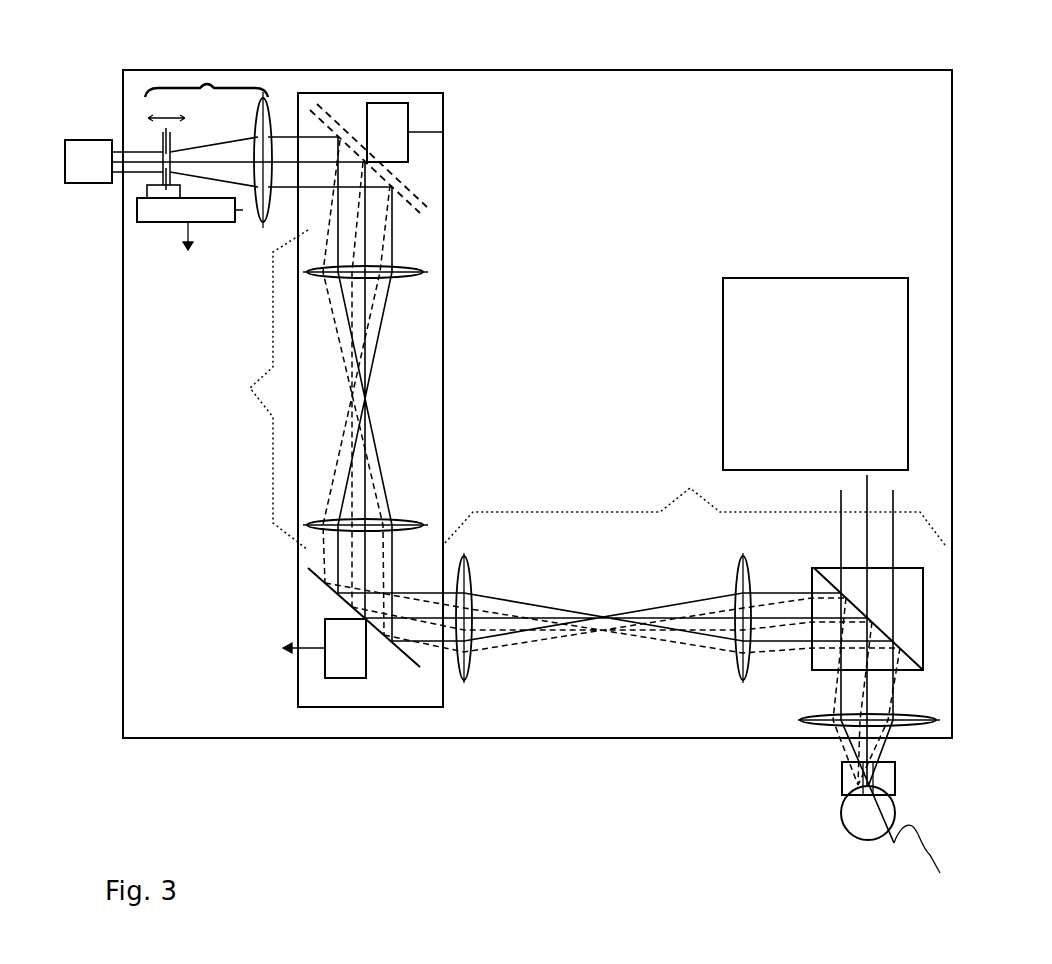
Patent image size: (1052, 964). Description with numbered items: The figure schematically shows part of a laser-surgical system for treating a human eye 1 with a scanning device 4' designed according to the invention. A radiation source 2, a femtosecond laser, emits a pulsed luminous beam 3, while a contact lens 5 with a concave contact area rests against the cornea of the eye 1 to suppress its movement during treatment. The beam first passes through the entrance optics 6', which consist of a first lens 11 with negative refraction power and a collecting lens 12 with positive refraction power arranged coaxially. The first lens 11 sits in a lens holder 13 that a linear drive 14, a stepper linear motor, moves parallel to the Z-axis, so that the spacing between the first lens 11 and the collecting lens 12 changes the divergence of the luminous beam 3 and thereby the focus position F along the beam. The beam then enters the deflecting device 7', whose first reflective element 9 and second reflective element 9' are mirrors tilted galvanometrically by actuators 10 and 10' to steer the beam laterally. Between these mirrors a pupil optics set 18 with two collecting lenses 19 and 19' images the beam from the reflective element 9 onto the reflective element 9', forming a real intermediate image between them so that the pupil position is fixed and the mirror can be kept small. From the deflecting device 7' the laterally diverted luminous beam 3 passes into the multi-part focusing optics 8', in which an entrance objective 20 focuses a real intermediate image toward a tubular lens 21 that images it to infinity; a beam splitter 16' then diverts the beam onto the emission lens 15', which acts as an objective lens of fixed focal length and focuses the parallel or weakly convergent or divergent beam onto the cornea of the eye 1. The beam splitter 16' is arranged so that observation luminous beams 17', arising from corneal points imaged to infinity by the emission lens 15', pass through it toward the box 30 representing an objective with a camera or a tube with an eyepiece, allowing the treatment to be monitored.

The eye 1 is at (890, 817).
The radiation source 2 is at (85, 142).
The luminous beam 3 is at (133, 177).
The scanning device 4' is at (537, 375).
The contact lens 5 is at (842, 788).
The entrance optics 6' is at (206, 69).
The deflecting device 7' is at (265, 654).
The focusing optics 8' is at (695, 501).
The first reflective element 9 is at (405, 158).
The second reflective element 9' is at (374, 650).
The actuator 10 is at (439, 123).
The actuator 10' is at (310, 672).
The first lens 11 is at (157, 140).
The collecting lens 12 is at (270, 99).
The lens holder 13 is at (147, 188).
The linear drive 14 is at (167, 222).
The emission lens 15' is at (824, 743).
The beam splitter 16' is at (851, 595).
The observation luminous beams 17' is at (898, 508).
The pupil optics set 18 is at (254, 390).
The collecting lens 19 is at (405, 294).
The collecting lens 19' is at (408, 503).
The entrance objective 20 is at (470, 582).
The tubular lens 21 is at (737, 578).
The objective with camera or tube and eyepiece 30 is at (722, 325).
The focus position F is at (920, 865).